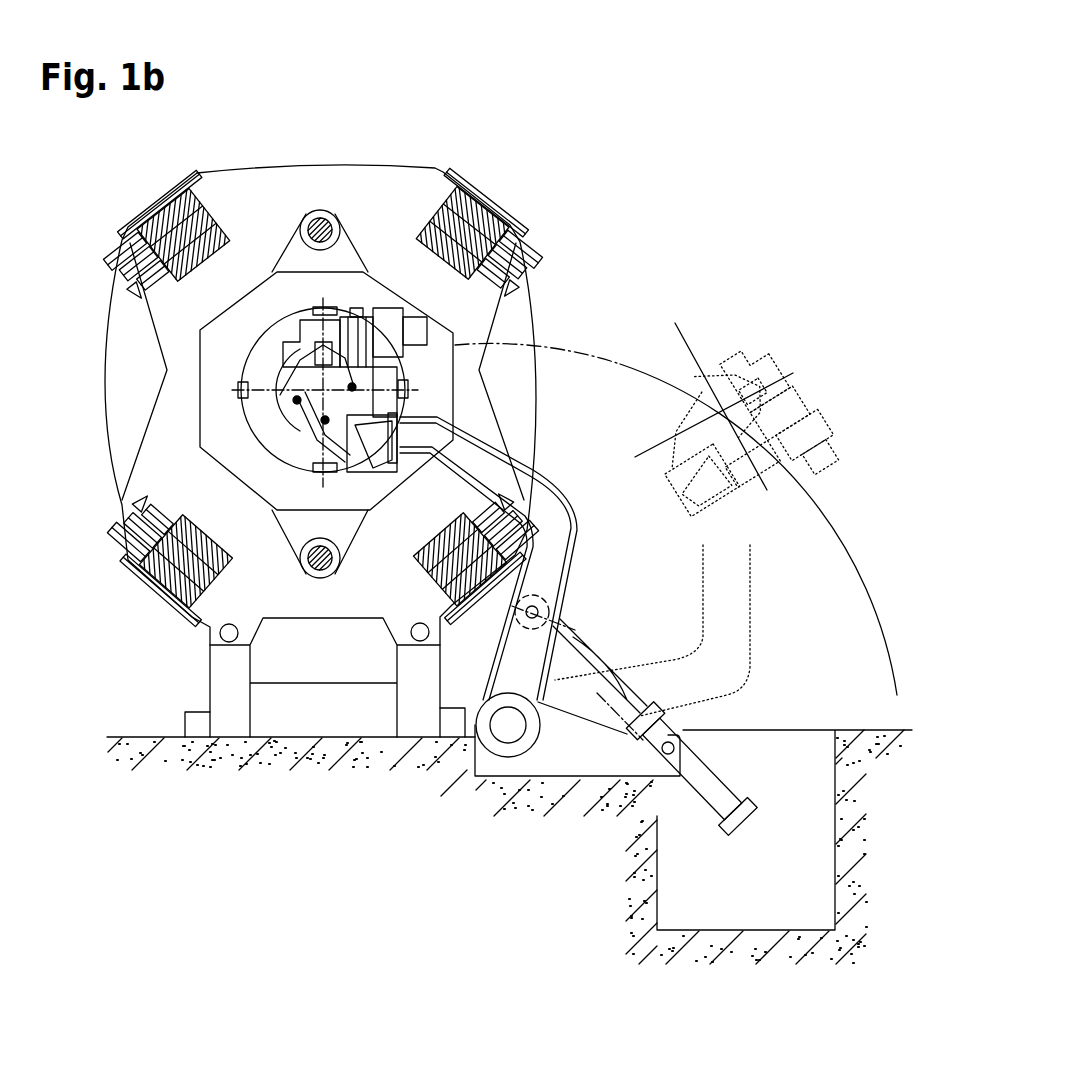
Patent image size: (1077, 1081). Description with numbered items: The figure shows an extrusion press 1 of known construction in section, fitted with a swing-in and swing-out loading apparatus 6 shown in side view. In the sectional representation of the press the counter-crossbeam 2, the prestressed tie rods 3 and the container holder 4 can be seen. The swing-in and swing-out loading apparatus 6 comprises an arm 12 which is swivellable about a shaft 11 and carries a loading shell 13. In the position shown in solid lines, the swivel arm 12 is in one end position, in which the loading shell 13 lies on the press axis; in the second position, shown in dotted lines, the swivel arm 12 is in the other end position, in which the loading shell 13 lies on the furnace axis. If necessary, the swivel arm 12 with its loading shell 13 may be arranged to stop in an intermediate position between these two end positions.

The extrusion press 1 is at (267, 133).
The counter-crossbeam 2 is at (213, 193).
The prestressed tie rods 3 is at (180, 203).
The container holder 4 is at (218, 372).
The swing-in and swing-out loading apparatus 6 is at (743, 315).
The shaft 11 is at (510, 733).
The arm 12 is at (547, 537).
The loading shell 13 is at (354, 288).